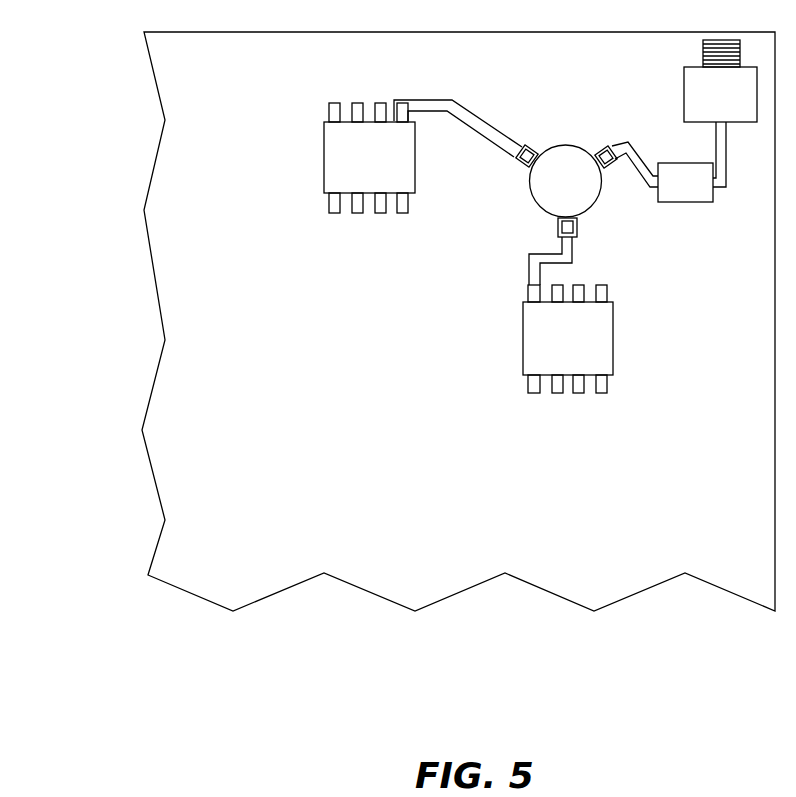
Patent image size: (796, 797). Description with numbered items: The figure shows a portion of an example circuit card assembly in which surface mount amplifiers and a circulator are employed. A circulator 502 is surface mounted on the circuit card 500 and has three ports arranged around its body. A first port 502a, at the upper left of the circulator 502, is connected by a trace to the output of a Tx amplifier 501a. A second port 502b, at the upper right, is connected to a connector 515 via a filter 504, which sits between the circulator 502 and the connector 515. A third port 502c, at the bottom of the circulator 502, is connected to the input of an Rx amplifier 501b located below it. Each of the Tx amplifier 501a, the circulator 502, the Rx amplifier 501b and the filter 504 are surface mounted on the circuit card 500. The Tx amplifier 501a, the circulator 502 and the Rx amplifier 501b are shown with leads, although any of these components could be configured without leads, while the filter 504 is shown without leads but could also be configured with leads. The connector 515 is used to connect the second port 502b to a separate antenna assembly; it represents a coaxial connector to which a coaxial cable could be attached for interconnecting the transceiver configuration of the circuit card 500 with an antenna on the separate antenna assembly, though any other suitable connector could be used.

The circuit card 500 is at (144, 208).
The Tx amplifier 501a is at (369, 158).
The Rx amplifier 501b is at (568, 339).
The circulator 502 is at (566, 181).
The first port 502a is at (537, 145).
The second port 502b is at (608, 172).
The third port 502c is at (556, 226).
The filter 504 is at (692, 162).
The connector 515 is at (720, 81).